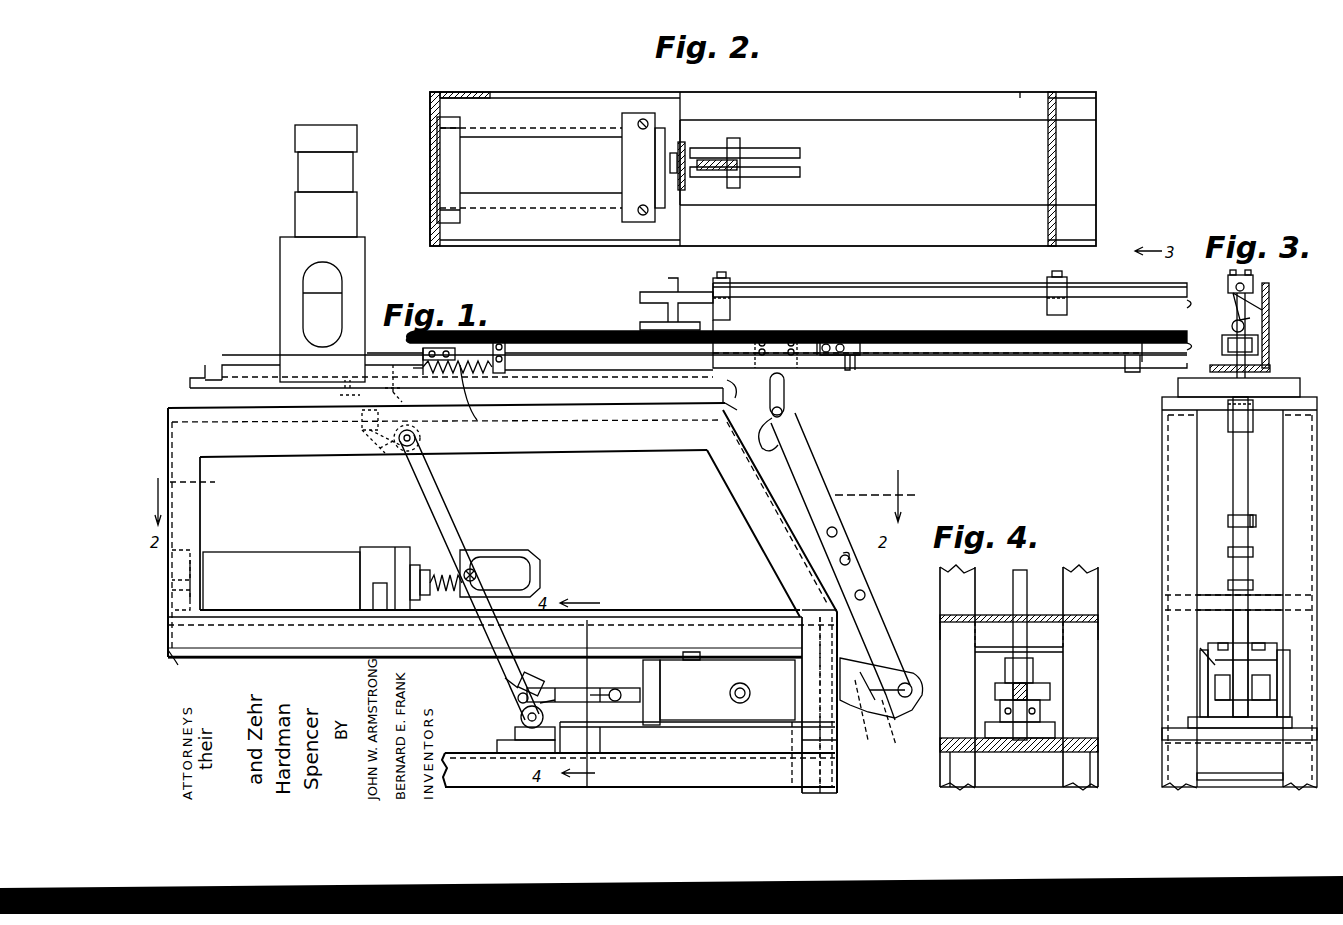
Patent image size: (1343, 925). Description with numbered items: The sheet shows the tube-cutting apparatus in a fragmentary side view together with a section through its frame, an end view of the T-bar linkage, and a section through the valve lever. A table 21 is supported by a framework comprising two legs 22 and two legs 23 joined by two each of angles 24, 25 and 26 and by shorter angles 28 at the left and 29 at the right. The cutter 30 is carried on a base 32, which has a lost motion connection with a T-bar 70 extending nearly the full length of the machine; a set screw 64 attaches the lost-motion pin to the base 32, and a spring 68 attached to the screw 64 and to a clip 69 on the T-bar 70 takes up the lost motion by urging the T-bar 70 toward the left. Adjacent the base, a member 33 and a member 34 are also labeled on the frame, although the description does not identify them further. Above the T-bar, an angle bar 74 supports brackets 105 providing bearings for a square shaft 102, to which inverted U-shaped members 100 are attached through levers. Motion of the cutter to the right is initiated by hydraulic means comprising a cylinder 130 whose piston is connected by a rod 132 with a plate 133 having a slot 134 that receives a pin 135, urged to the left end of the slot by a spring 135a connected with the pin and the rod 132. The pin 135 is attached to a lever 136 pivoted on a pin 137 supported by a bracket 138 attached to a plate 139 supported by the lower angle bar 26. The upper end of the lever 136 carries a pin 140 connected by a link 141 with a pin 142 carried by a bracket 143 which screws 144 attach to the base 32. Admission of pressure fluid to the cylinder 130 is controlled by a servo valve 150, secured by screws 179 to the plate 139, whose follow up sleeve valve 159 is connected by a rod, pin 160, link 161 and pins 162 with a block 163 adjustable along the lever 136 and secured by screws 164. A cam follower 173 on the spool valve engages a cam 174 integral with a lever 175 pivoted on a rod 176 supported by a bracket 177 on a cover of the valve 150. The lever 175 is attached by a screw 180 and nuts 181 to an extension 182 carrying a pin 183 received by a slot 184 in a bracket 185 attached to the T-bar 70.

In FIG. 1, the table 21 is at (725, 405).
In FIG. 1, the legs 22 is at (190, 523).
In FIG. 2, the legs 22 is at (465, 100).
In FIG. 4, the legs 22 is at (1098, 588).
In FIG. 1, the legs 23 is at (768, 547).
In FIG. 2, the legs 23 is at (1020, 95).
In FIG. 3, the legs 23 is at (1162, 497).
In FIG. 1, the angles 24 is at (268, 455).
In FIG. 1, the angles 25 is at (284, 610).
In FIG. 2, the angles 25 is at (900, 92).
In FIG. 4, the angles 25 is at (1019, 633).
In FIG. 1, the angles 26 is at (472, 756).
In FIG. 4, the angles 26 is at (1106, 770).
In FIG. 1, the shorter angles 28 is at (181, 652).
In FIG. 4, the shorter angles 28 is at (1000, 618).
In FIG. 1, the shorter angles 29 is at (819, 701).
In FIG. 3, the shorter angles 29 is at (1270, 628).
In FIG. 1, the cutter 30 is at (280, 204).
In FIG. 1, the base 32 is at (255, 370).
In FIG. 1, the bracket 33 is at (204, 380).
In FIG. 1, the stop bracket 34 is at (735, 389).
In FIG. 1, the set screw 64 is at (412, 368).
In FIG. 1, the spring 68 is at (478, 422).
In FIG. 1, the clip 69 is at (505, 353).
In FIG. 1, the T-bar 70 is at (518, 334).
In FIG. 1, the angle bar 74 is at (960, 368).
In FIG. 3, the angle bar 74 is at (1270, 325).
In FIG. 1, the inverted U-shaped members 100 is at (640, 325).
In FIG. 1, the square shaft 102 is at (992, 278).
In FIG. 1, the brackets 105 is at (730, 316).
In FIG. 1, the cylinder 130 is at (298, 552).
In FIG. 2, the cylinder 130 is at (573, 205).
In FIG. 1, the rod 132 is at (405, 547).
In FIG. 2, the rod 132 is at (668, 210).
In FIG. 1, the plate 133 is at (520, 550).
In FIG. 2, the plate 133 is at (780, 178).
In FIG. 1, the slot 134 is at (512, 572).
In FIG. 1, the pin 135 is at (499, 592).
In FIG. 2, the pin 135 is at (741, 178).
In FIG. 1, the spring 135a is at (398, 595).
In FIG. 1, the lever 136 is at (440, 488).
In FIG. 2, the lever 136 is at (710, 172).
In FIG. 1, the pin 137 is at (521, 720).
In FIG. 1, the bracket 138 is at (565, 710).
In FIG. 1, the plate 139 is at (628, 727).
In FIG. 1, the pin 140 is at (421, 436).
In FIG. 1, the link 141 is at (388, 448).
In FIG. 1, the pin 142 is at (362, 432).
In FIG. 1, the bracket 143 is at (345, 397).
In FIG. 1, the screws 144 is at (400, 397).
In FIG. 1, the servo valve 150 is at (718, 660).
In FIG. 3, the servo valve 150 is at (1208, 655).
In FIG. 1, the follow up sleeve valve 159 is at (650, 690).
In FIG. 1, the pin 160 is at (617, 689).
In FIG. 1, the link 161 is at (595, 690).
In FIG. 1, the pins 162 is at (518, 700).
In FIG. 1, the block 163 is at (536, 680).
In FIG. 1, the screws 164 is at (505, 682).
In FIG. 1, the cam follower 173 is at (859, 718).
In FIG. 1, the cam 174 is at (894, 728).
In FIG. 1, the lever 175 is at (888, 600).
In FIG. 3, the lever 175 is at (1238, 622).
In FIG. 4, the lever 175 is at (1022, 578).
In FIG. 1, the rod 176 is at (908, 683).
In FIG. 4, the rod 176 is at (1050, 690).
In FIG. 1, the bracket 177 is at (880, 658).
In FIG. 4, the bracket 177 is at (1005, 670).
In FIG. 1, the screws 179 is at (686, 655).
In FIG. 3, the screws 179 is at (1200, 648).
In FIG. 1, the screw 180 is at (847, 550).
In FIG. 3, the screw 180 is at (1230, 522).
In FIG. 3, the nuts 181 is at (1253, 522).
In FIG. 1, the extension 182 is at (802, 466).
In FIG. 3, the extension 182 is at (1240, 468).
In FIG. 1, the pin 183 is at (783, 411).
In FIG. 1, the slot 184 is at (785, 389).
In FIG. 3, the slot 184 is at (1233, 427).
In FIG. 1, the bracket 185 is at (767, 437).